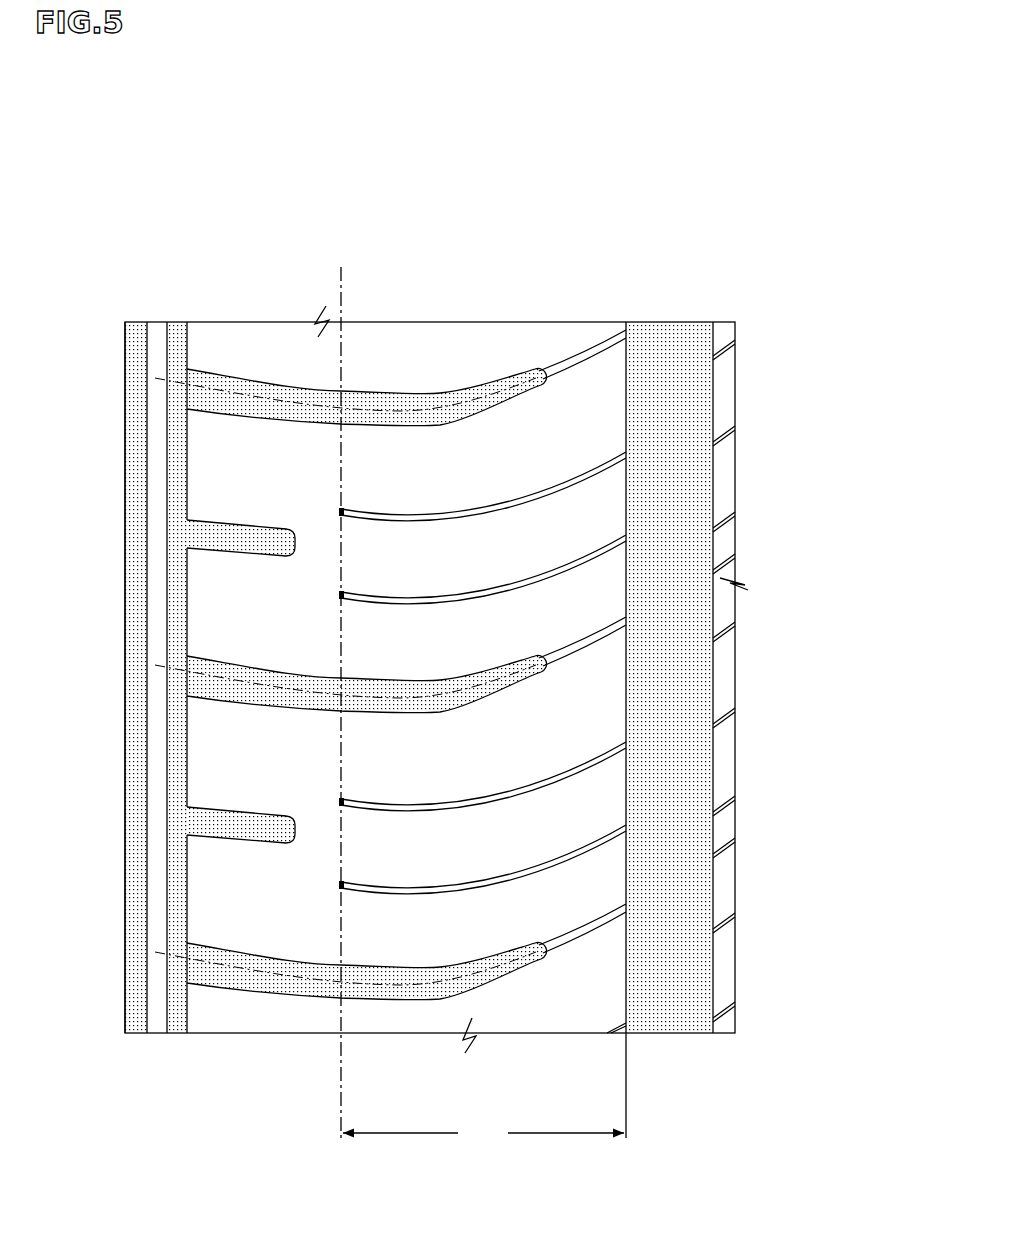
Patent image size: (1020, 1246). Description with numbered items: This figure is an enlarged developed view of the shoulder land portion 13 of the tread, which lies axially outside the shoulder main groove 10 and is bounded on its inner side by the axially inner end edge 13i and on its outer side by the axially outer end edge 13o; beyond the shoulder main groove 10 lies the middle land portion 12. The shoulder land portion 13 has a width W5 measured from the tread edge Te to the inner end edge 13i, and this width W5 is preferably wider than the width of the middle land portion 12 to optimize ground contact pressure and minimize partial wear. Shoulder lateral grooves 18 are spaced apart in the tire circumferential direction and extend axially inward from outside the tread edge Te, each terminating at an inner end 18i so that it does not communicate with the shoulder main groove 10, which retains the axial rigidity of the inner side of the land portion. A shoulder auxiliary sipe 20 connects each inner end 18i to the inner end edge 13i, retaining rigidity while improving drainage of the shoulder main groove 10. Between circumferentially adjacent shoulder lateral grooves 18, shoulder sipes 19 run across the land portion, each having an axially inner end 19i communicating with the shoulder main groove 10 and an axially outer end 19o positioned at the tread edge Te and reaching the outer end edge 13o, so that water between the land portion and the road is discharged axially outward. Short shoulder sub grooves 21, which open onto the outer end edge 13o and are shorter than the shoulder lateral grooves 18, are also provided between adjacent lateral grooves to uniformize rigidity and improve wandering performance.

The shoulder main groove 10 is at (677, 351).
The middle land portion 12 is at (723, 319).
The shoulder land portion 13 is at (453, 363).
The axially outer end edge of the shoulder land portion 13o is at (185, 340).
The axially inner end edge of the shoulder land portion 13i is at (629, 350).
The shoulder lateral groove 18 is at (400, 403).
The inner end of the shoulder lateral groove 18i is at (546, 380).
The shoulder sipe 19 is at (580, 472).
The axially outer end of the shoulder sipe 19o is at (341, 512).
The axially inner end of the shoulder sipe 19i is at (630, 474).
The shoulder auxiliary sipe 20 is at (594, 351).
The shoulder sub groove 21 is at (259, 544).
The tread edge Te is at (338, 688).
The width of the shoulder land portion W5 is at (483, 1135).